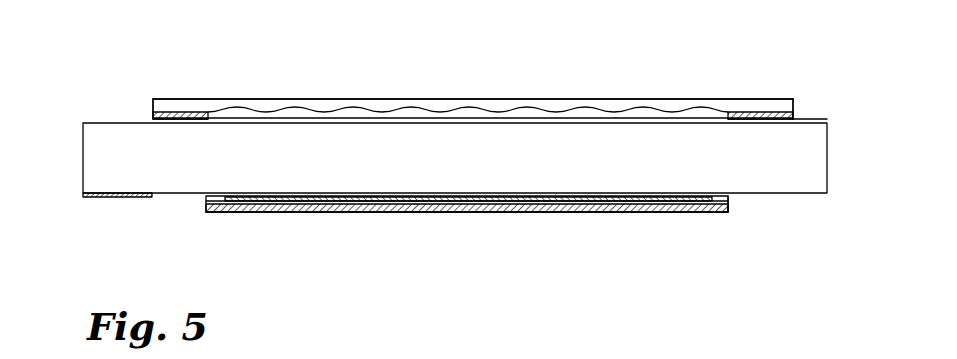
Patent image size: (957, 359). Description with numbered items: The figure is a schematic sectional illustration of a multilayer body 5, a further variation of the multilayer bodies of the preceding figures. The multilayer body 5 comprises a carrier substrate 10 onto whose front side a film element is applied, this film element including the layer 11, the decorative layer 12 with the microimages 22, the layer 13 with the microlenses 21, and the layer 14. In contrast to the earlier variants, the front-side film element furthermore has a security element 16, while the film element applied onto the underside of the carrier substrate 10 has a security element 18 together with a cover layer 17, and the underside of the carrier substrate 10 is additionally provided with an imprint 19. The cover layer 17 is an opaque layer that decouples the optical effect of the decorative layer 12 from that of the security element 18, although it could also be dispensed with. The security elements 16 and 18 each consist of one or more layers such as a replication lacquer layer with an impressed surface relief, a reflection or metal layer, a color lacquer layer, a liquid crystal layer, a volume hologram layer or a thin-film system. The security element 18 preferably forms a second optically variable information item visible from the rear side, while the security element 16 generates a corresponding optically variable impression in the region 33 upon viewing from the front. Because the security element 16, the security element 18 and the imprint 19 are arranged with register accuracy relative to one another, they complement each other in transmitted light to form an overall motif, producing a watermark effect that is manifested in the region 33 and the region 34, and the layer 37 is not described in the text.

The multilayer body 5 is at (759, 43).
The carrier substrate 10 is at (824, 161).
The layer 11 is at (800, 122).
The decorative layer 12 is at (208, 203).
The layer with microlenses 13 is at (677, 113).
The layer 14 is at (797, 107).
The security element 16 is at (153, 113).
The cover layer 17 is at (207, 199).
The security element 18 is at (728, 213).
The imprint 19 is at (83, 193).
The microlenses 21 is at (348, 102).
The microimages 22 is at (680, 212).
The region 33 is at (180, 90).
The region 34 is at (99, 104).
The upper cover layer 37 is at (458, 77).